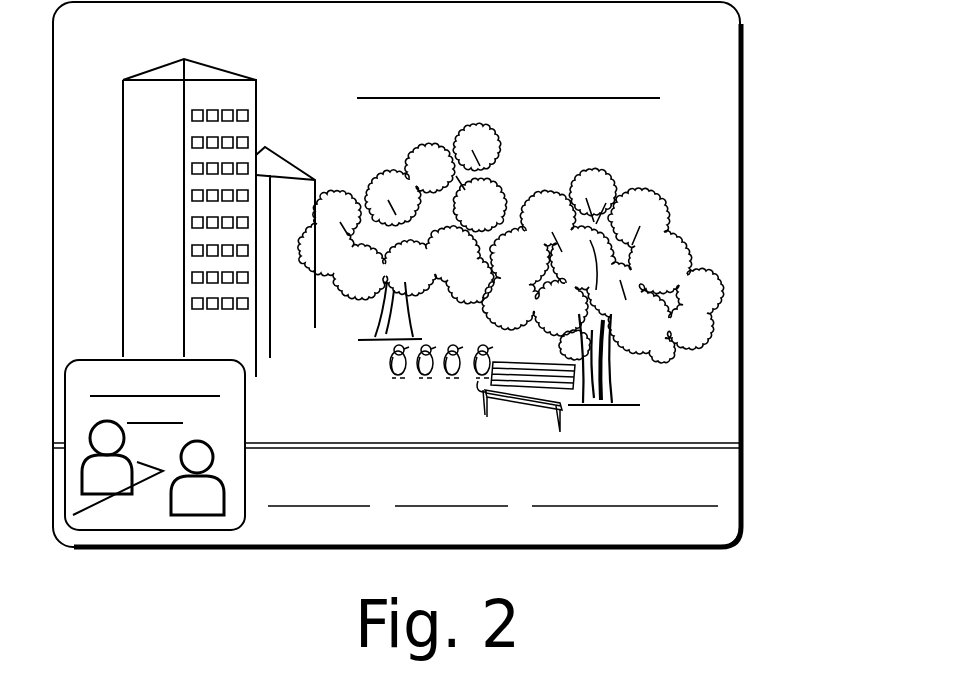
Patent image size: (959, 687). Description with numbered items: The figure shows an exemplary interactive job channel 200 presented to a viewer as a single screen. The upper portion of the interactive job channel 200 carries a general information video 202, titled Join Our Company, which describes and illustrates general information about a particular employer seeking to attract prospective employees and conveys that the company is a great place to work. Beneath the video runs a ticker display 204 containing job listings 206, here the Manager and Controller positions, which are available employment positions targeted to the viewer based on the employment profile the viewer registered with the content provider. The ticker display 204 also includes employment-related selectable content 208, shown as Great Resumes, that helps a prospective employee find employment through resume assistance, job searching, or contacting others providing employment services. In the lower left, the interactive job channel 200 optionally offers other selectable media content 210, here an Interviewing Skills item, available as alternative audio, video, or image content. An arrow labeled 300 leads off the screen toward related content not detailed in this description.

The interactive job channel 200 is at (766, 62).
The general information video 202 is at (720, 198).
The ticker display 204 is at (716, 430).
The job listings 206 is at (405, 512).
The employment-related selectable content 208 is at (587, 517).
The selectable media content 210 is at (138, 518).
The arrow to next screen 300 is at (724, 674).